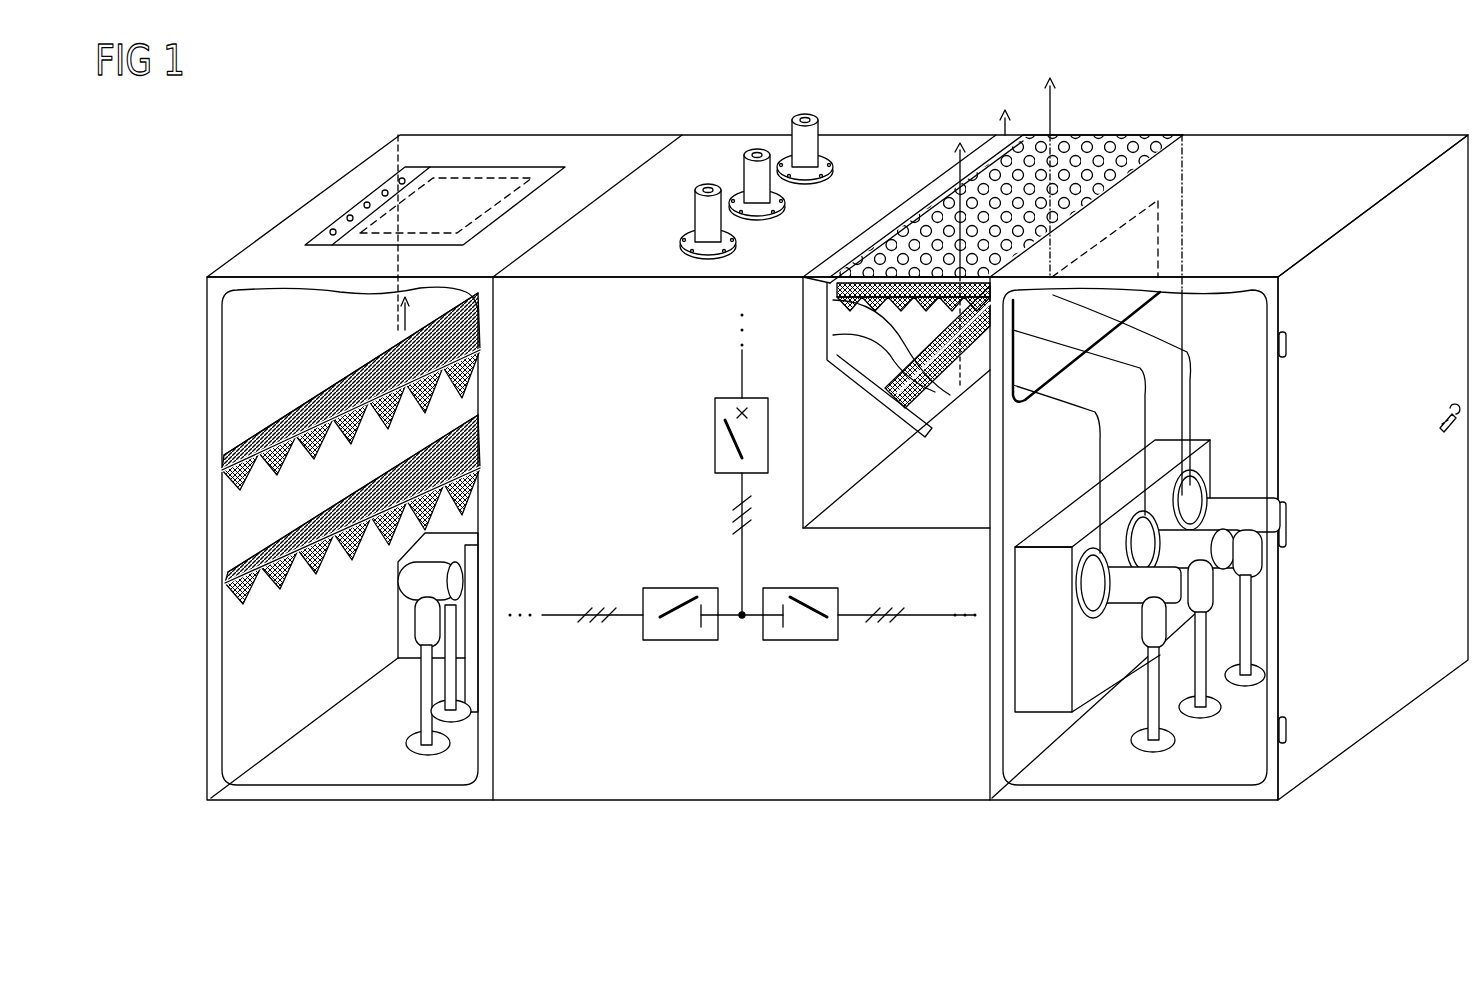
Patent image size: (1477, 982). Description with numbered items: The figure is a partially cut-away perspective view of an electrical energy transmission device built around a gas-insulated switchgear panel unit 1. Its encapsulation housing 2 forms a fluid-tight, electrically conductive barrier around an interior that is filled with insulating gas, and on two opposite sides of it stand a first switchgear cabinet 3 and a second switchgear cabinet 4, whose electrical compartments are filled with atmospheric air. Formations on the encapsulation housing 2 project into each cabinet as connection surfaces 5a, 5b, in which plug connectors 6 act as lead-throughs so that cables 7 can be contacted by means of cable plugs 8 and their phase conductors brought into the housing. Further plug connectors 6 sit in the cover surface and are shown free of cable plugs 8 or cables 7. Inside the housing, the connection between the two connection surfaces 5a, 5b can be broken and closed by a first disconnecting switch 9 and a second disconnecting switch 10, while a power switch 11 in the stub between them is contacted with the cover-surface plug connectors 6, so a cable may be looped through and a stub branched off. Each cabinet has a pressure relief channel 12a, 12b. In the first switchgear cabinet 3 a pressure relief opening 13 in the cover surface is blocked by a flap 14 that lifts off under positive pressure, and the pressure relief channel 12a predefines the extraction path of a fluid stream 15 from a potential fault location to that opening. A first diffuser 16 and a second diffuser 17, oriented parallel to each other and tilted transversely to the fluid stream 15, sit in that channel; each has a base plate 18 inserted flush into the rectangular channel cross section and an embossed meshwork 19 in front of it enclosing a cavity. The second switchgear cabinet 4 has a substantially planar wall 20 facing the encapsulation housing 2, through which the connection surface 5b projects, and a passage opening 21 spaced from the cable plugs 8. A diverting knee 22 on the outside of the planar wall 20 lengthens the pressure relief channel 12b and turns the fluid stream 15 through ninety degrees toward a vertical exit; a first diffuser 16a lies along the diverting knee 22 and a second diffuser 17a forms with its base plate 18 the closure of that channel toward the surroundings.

The gas-insulated switchgear panel unit 1 is at (1278, 873).
The encapsulation housing 2 is at (493, 806).
The first switchgear cabinet 3 is at (493, 806).
The second switchgear cabinet 4 is at (1278, 806).
The connection surface 5a is at (478, 682).
The connection surface 5b is at (1027, 688).
The plug connector 6 is at (793, 122).
The cable 7 is at (448, 685).
The cable plug 8 is at (400, 584).
The first disconnecting switch 9 is at (683, 642).
The second disconnecting switch 10 is at (800, 642).
The power switch 11 is at (715, 437).
The pressure relief channel 12a is at (257, 378).
The pressure relief channel 12b is at (970, 410).
The pressure relief opening 13 is at (487, 185).
The flap 14 is at (544, 167).
The fluid stream 15 is at (1200, 398).
The first diffuser 16 is at (262, 580).
The first diffuser 16a is at (870, 372).
The second diffuser 17 is at (255, 458).
The second diffuser 17a is at (1100, 135).
The base plate 18 is at (265, 412).
The meshwork 19 is at (262, 490).
The planar wall 20 is at (1165, 178).
The passage opening 21 is at (1150, 225).
The diverting knee 22 is at (888, 405).